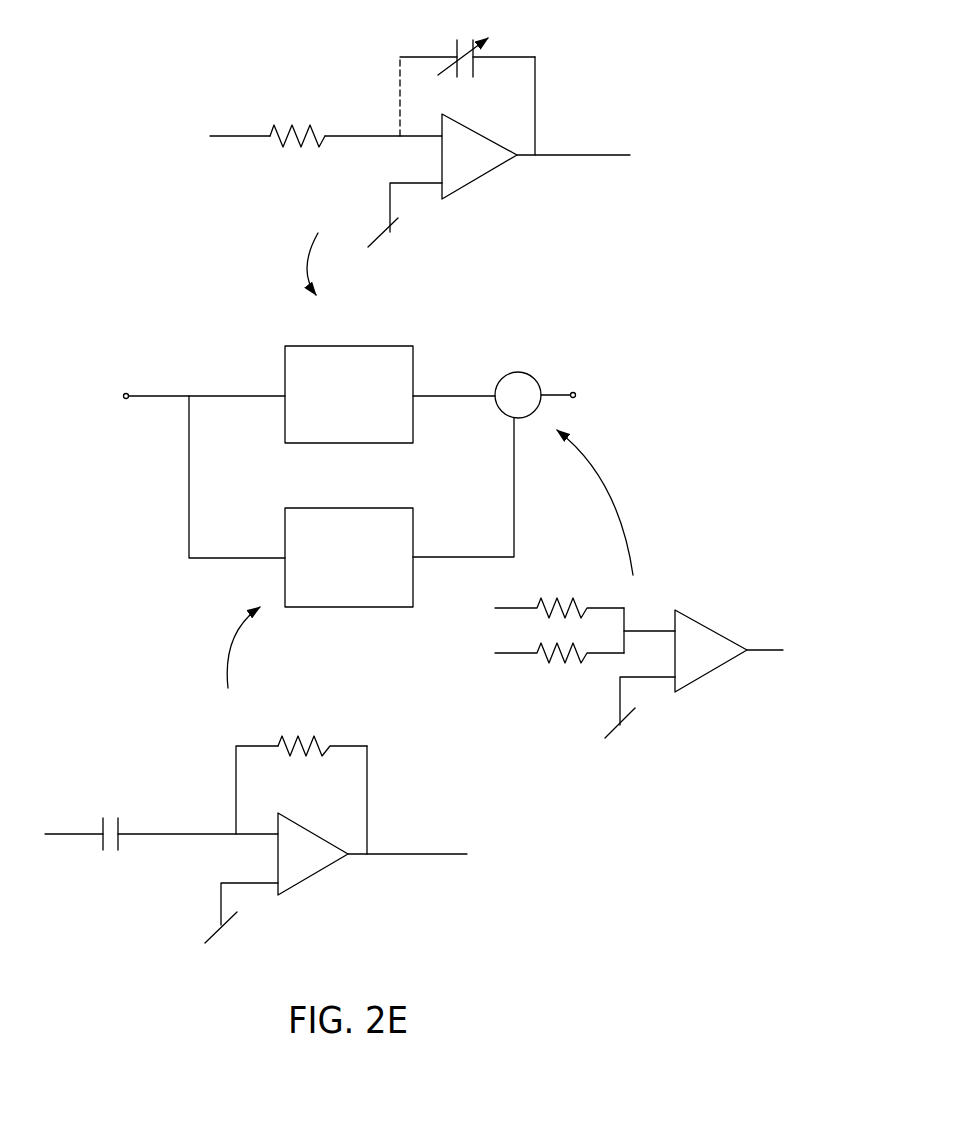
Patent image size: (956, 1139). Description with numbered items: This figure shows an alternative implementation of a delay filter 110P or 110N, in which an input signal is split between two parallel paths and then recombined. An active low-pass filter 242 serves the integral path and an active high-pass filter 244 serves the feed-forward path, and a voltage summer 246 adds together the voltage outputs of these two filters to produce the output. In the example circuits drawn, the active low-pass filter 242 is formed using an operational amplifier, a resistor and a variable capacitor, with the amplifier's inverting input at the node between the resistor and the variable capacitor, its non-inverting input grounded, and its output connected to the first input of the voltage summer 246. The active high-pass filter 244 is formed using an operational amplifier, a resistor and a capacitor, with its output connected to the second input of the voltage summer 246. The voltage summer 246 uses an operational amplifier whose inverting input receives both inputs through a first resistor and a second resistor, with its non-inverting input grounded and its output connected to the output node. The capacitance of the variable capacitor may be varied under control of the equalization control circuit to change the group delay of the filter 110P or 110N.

The active low-pass filter 242 is at (349, 394).
The active high-pass filter 244 is at (349, 557).
The voltage summer 246 is at (518, 378).
The filter 110P is at (421, 523).
The filter 110N is at (421, 523).